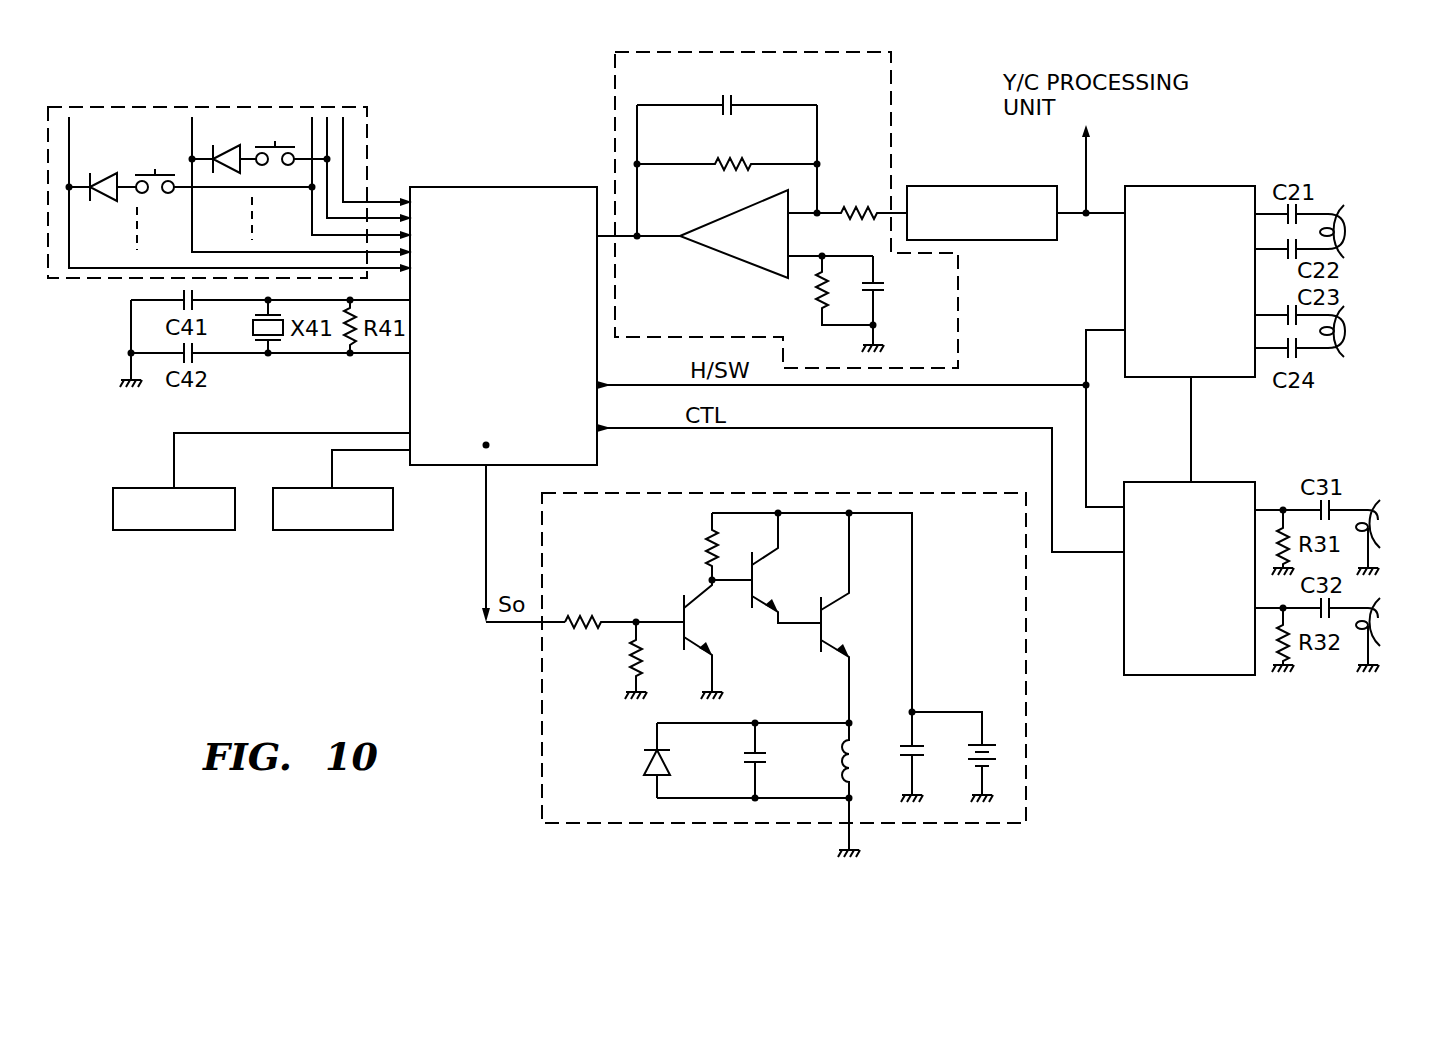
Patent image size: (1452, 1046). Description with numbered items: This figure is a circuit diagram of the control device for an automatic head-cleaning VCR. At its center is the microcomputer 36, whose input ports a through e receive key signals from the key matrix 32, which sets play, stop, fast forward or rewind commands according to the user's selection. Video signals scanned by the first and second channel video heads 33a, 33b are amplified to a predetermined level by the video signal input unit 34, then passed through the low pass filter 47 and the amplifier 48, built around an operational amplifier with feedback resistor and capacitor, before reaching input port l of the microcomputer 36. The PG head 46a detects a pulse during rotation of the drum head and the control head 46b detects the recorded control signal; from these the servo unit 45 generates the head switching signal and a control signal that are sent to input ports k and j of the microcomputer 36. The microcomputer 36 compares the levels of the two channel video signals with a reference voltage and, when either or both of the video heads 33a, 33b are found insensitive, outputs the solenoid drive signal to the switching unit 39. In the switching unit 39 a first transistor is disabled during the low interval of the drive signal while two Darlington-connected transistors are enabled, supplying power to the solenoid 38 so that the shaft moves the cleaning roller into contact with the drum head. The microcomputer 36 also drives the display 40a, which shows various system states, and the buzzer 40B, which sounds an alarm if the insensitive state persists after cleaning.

The key matrix 32 is at (283, 107).
The microcomputer 36 is at (515, 187).
The amplifier 48 is at (613, 82).
The low pass filter 47 is at (947, 185).
The video signal input unit 34 is at (1218, 186).
The first channel video head 33a is at (1354, 231).
The second channel video head 33b is at (1355, 331).
The servo unit 45 is at (1234, 482).
The PG head 46a is at (1391, 537).
The control head 46b is at (1391, 635).
The display 40a is at (210, 530).
The buzzer 40B is at (368, 530).
The switching unit 39 is at (820, 675).
The solenoid 38 is at (866, 760).